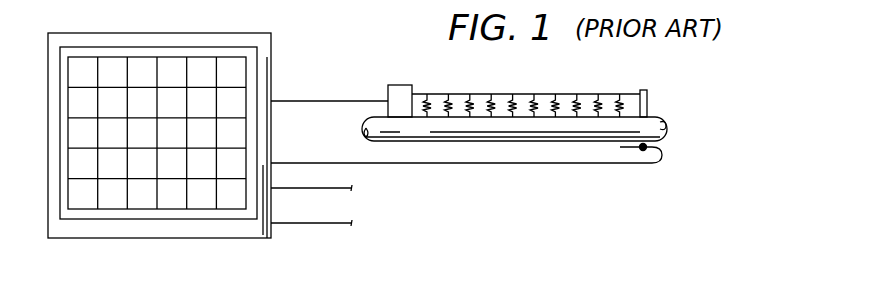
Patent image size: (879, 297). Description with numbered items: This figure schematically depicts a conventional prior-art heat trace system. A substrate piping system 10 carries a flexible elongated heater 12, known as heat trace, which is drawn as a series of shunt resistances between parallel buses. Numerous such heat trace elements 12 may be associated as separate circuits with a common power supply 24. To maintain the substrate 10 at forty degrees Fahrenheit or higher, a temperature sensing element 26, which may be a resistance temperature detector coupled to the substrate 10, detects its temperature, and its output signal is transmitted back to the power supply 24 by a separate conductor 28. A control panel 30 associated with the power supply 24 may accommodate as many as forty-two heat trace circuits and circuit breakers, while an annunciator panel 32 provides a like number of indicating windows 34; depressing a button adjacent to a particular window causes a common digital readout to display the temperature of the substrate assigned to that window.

The substrate piping system 10 is at (653, 122).
The flexible elongated heater 12 is at (543, 94).
The common power supply 24 is at (203, 240).
The temperature sensing element 26 is at (635, 149).
The separate conductor 28 is at (462, 165).
The control panel 30 is at (235, 205).
The annunciator panel 32 is at (120, 230).
The indicating windows 34 is at (148, 200).